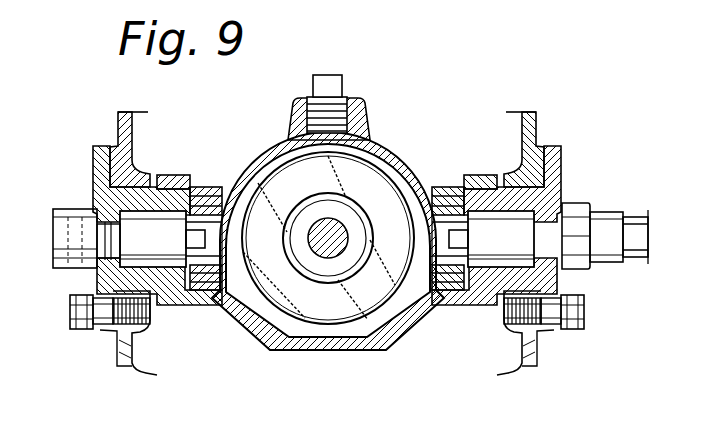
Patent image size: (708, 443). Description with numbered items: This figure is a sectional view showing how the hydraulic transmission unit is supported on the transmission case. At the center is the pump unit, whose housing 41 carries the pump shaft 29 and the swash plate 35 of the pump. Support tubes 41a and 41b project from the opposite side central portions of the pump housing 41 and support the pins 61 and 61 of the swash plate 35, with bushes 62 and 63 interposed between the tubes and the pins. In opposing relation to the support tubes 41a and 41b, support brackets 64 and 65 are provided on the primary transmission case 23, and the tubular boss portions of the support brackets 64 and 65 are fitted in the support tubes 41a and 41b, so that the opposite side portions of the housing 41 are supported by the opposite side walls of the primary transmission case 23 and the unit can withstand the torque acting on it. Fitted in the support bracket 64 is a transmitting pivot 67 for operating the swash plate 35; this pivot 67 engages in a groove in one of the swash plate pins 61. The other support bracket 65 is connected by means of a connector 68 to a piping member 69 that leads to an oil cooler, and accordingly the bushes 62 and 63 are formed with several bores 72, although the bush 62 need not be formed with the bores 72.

The primary transmission case 23 is at (119, 124).
The pump shaft 29 is at (320, 232).
The swash plate 35 is at (402, 140).
The housing 41 is at (283, 128).
The support tube 41a is at (172, 176).
The support tube 41b is at (478, 176).
The pin 61 is at (218, 231).
The bush 62 is at (201, 188).
The bush 63 is at (450, 188).
The support bracket 64 is at (93, 153).
The support bracket 65 is at (562, 158).
The transmitting pivot 67 is at (54, 232).
The connector 68 is at (594, 212).
The piping member 69 is at (638, 215).
The bores 72 is at (200, 291).